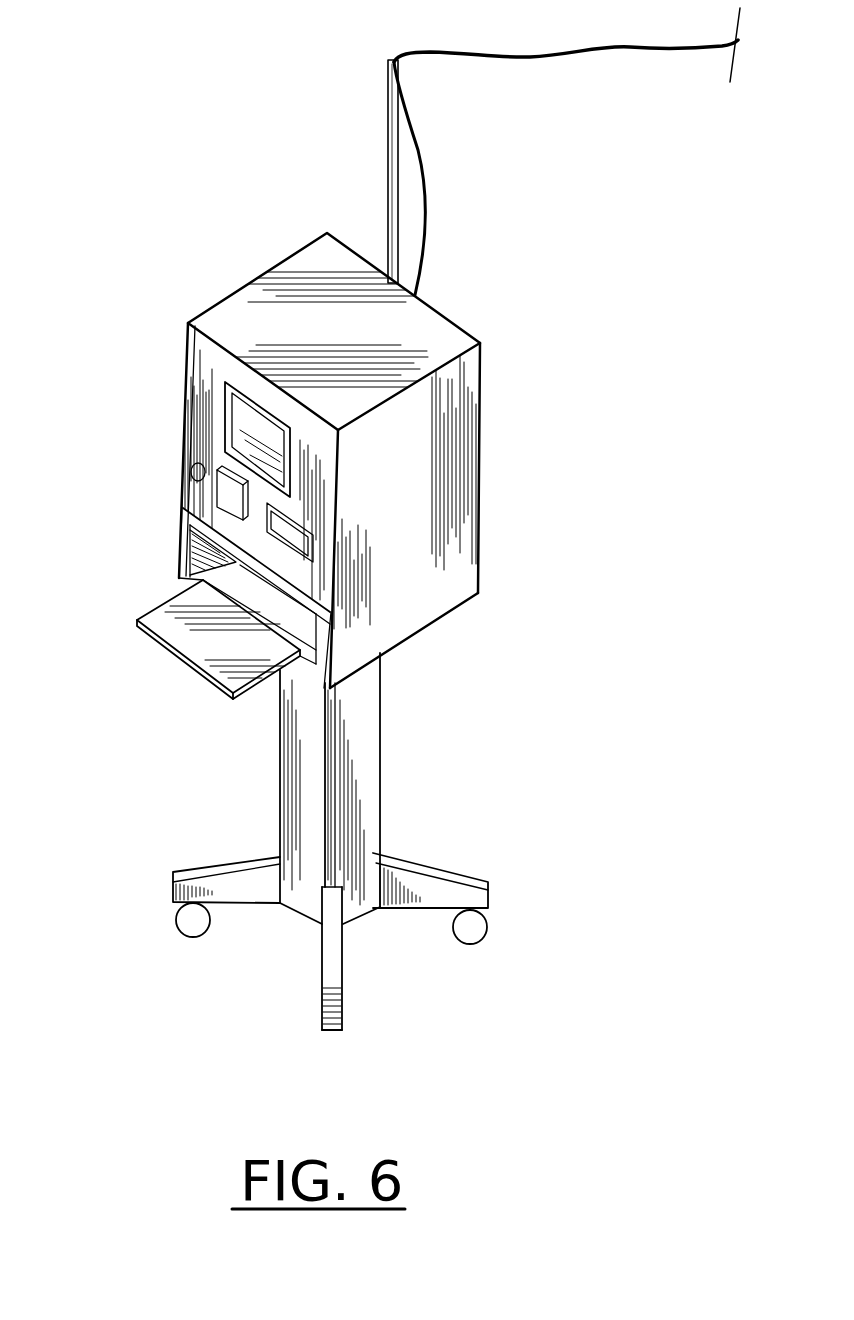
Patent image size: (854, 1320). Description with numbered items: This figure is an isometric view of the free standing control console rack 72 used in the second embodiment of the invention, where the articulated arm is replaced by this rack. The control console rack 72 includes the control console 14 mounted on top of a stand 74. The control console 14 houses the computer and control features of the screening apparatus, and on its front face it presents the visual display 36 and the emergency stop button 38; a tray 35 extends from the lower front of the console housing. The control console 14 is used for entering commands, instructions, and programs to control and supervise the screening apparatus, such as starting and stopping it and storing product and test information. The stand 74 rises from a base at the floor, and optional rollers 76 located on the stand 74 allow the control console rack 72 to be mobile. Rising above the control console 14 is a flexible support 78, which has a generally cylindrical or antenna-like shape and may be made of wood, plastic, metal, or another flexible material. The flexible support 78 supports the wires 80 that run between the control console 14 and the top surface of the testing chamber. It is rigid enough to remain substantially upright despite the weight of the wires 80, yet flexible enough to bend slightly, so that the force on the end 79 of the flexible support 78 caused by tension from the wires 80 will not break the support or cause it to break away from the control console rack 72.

The control console 14 is at (486, 500).
The tray 35 is at (158, 607).
The visual display 36 is at (232, 414).
The emergency stop button 38 is at (191, 470).
The control console rack 72 is at (446, 864).
The stand 74 is at (383, 718).
The rollers 76 is at (177, 925).
The flexible support 78 is at (388, 178).
The end of the flexible support 79 is at (393, 60).
The wires 80 is at (587, 40).